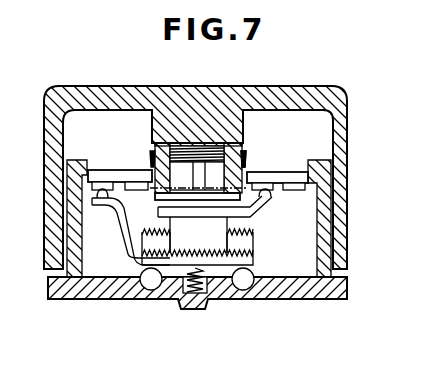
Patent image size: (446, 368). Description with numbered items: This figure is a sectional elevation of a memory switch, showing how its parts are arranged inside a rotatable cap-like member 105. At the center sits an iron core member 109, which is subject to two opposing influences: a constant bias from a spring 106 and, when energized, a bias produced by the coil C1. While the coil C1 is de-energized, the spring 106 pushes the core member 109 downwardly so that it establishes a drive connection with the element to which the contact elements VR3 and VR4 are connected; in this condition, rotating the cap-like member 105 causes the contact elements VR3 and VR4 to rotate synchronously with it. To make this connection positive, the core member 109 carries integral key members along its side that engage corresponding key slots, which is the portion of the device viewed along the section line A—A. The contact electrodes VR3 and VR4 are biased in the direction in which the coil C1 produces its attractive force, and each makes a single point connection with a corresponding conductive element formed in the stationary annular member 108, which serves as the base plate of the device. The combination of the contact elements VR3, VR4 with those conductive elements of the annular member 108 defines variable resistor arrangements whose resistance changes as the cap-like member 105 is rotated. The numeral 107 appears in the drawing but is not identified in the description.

The cap-like member 105 is at (304, 84).
The spring 106 is at (210, 136).
The spring 107 is at (193, 300).
The stationary annular member 108 is at (297, 172).
The iron core member 109 is at (218, 241).
The contact element VR3 is at (271, 200).
The contact element VR4 is at (122, 214).
The coil C1 is at (247, 158).
The section line A— A is at (198, 156).